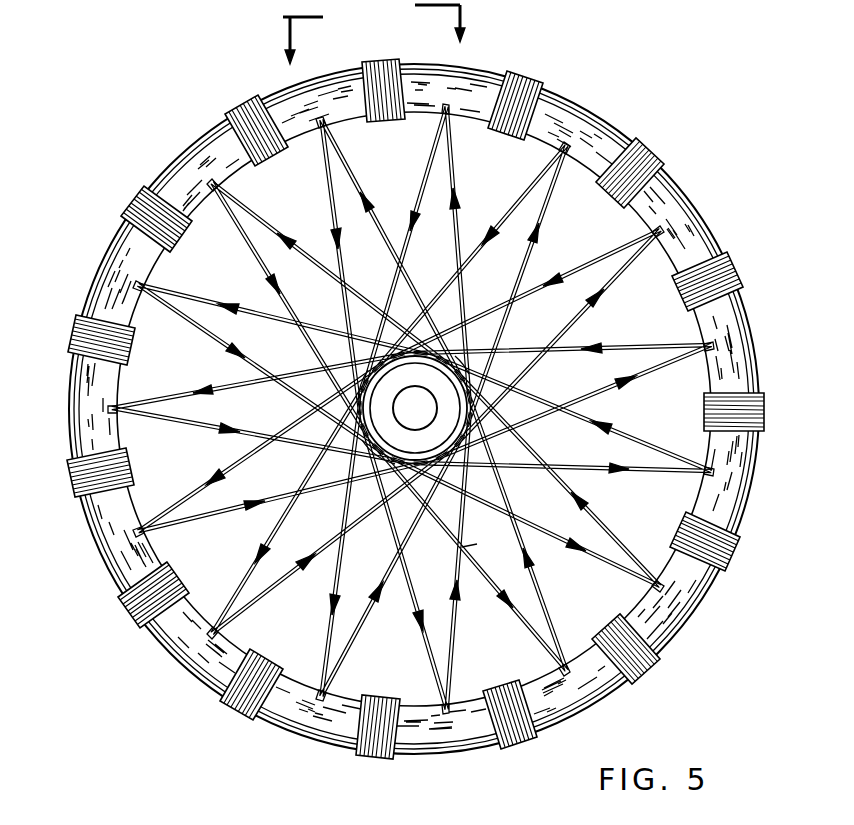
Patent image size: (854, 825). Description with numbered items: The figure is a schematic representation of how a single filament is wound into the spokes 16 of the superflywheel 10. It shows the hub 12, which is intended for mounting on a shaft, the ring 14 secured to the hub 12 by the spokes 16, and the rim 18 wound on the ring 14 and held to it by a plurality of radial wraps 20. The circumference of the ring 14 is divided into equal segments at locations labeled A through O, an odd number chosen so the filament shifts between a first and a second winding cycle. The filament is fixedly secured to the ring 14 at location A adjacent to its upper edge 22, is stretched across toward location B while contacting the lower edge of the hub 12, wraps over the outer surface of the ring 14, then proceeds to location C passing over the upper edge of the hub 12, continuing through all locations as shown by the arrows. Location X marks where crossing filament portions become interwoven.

The superflywheel 10 is at (402, 382).
The hub 12 is at (426, 390).
The ring 14 is at (632, 217).
The spokes 16 is at (427, 182).
The rim 18 is at (745, 304).
The radial wraps 20 is at (650, 157).
The upper edge 22 is at (697, 320).